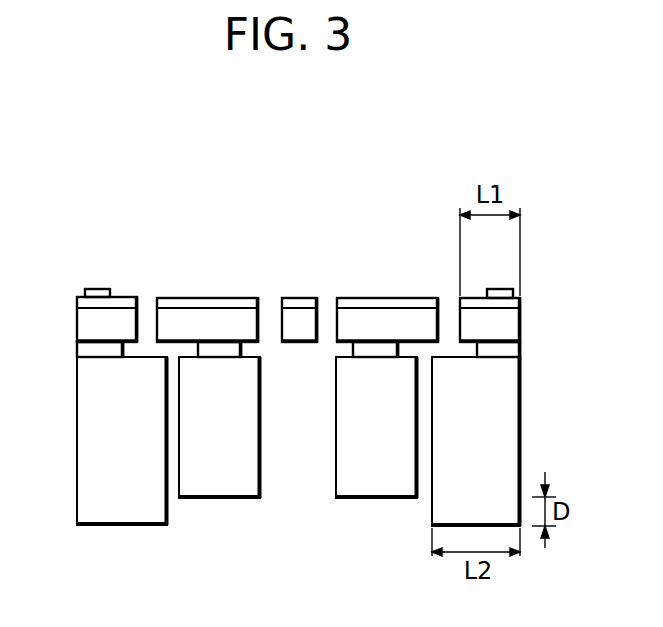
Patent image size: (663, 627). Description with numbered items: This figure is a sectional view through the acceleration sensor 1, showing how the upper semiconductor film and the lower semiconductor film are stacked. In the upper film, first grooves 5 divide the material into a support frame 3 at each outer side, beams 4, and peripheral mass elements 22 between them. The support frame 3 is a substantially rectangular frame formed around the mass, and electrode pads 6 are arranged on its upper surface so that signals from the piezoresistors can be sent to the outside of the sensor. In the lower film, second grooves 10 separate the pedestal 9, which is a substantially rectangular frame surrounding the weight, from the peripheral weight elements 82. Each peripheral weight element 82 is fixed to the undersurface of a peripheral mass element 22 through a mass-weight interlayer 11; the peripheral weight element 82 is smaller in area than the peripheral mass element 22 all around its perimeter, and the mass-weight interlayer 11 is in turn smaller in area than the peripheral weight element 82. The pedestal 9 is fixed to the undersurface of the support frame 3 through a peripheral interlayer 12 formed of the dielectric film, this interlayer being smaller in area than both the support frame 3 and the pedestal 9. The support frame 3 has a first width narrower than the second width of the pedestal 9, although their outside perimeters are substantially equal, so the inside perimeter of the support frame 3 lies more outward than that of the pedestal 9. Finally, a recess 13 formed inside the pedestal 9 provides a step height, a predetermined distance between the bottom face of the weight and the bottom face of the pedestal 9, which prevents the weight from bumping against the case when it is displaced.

The acceleration sensor 1 is at (287, 181).
The support frame 3 is at (86, 325).
The beams 4 is at (297, 320).
The first grooves 5 is at (147, 305).
The electrode pads 6 is at (97, 288).
The pedestal 9 is at (84, 448).
The second grooves 10 is at (174, 490).
The mass-weight interlayer 11 is at (229, 348).
The peripheral interlayer 12 is at (86, 353).
The recess 13 is at (272, 517).
The peripheral mass elements 22 is at (199, 318).
The peripheral weight elements 82 is at (236, 487).